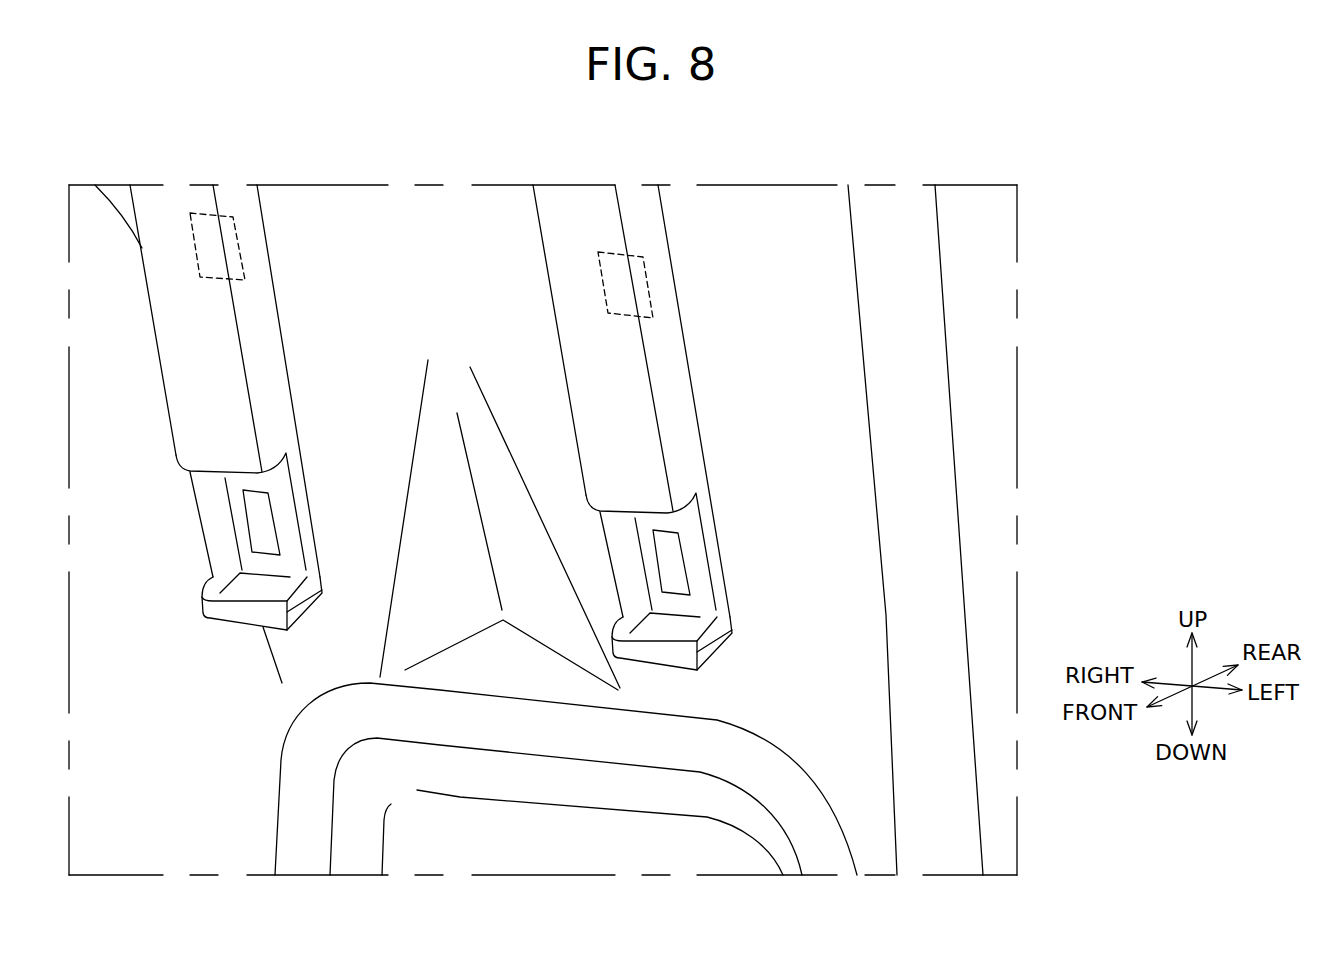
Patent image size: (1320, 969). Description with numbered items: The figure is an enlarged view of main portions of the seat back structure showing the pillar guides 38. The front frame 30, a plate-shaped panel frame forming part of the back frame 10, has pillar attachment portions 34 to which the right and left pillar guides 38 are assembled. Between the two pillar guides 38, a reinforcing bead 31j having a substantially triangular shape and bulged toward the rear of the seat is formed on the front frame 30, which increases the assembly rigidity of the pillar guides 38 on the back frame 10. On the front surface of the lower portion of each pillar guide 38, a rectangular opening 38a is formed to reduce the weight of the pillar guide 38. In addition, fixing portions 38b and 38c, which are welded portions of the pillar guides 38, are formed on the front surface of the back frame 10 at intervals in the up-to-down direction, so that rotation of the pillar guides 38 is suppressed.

The back frame 10 is at (543, 530).
The front frame 30 is at (791, 220).
The reinforcing bead 31j is at (483, 420).
The pillar attachment portion 34 is at (268, 248).
The pillar guide 38 is at (275, 343).
The opening 38a is at (712, 607).
The fixing portion 38b is at (678, 532).
The fixing portion 38c is at (647, 283).